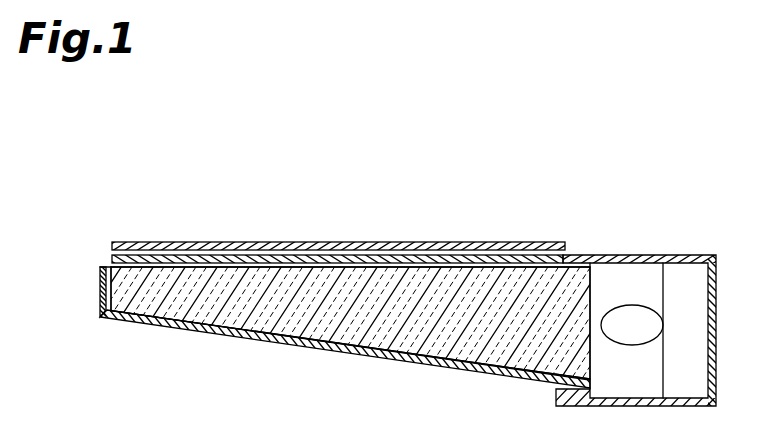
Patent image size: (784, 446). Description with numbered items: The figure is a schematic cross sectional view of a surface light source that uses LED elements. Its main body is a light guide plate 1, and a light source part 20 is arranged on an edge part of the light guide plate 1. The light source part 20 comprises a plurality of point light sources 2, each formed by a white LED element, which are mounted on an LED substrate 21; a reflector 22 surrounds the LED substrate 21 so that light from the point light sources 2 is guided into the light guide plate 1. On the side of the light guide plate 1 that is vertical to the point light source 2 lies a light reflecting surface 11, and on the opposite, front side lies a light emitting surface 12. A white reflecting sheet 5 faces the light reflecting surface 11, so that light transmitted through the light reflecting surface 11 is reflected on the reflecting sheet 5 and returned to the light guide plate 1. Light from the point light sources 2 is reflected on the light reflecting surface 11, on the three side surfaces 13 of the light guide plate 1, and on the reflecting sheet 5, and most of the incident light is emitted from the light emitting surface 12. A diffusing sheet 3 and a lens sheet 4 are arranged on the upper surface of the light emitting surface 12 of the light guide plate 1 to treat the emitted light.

The light guide plate 1 is at (442, 338).
The point light source 2 is at (628, 315).
The diffusing sheet 3 is at (428, 256).
The lens sheet 4 is at (313, 245).
The white reflecting sheet 5 is at (370, 357).
The light reflecting surface 11 is at (297, 340).
The light emitting surface 12 is at (232, 268).
The side surfaces 13 is at (108, 287).
The light source part 20 is at (667, 303).
The LED substrate 21 is at (690, 332).
The reflector 22 is at (683, 256).